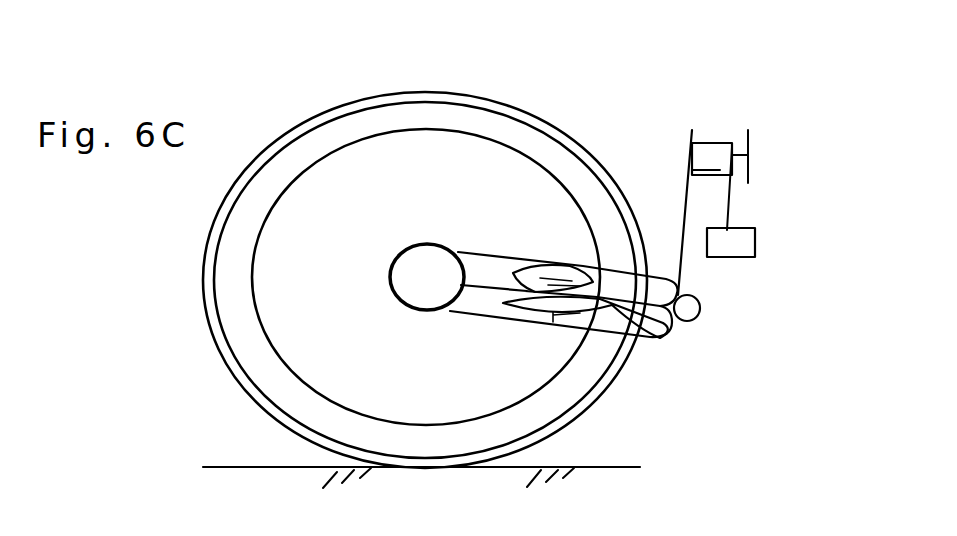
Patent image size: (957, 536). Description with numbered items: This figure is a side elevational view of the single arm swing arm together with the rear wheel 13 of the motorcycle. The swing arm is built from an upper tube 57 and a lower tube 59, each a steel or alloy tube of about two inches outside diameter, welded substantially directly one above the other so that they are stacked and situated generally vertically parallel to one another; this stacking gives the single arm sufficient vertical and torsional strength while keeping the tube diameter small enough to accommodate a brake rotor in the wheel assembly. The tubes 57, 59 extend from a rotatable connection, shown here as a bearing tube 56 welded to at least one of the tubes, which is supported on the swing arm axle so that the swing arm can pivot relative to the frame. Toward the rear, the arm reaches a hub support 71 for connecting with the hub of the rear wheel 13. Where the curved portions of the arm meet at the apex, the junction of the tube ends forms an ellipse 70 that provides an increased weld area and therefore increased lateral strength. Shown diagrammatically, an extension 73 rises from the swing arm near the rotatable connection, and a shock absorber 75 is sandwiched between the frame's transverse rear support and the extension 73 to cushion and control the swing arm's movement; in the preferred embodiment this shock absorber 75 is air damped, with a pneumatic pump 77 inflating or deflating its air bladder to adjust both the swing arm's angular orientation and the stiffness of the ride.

The rear wheel 13 is at (313, 150).
The bearing tube 56 is at (700, 308).
The upper tube 57 is at (488, 266).
The lower tube 59 is at (485, 302).
The ellipse 70 is at (560, 326).
The hub support 71 is at (410, 288).
The extension 73 is at (683, 203).
The shock absorber 75 is at (733, 104).
The pneumatic pump 77 is at (764, 236).